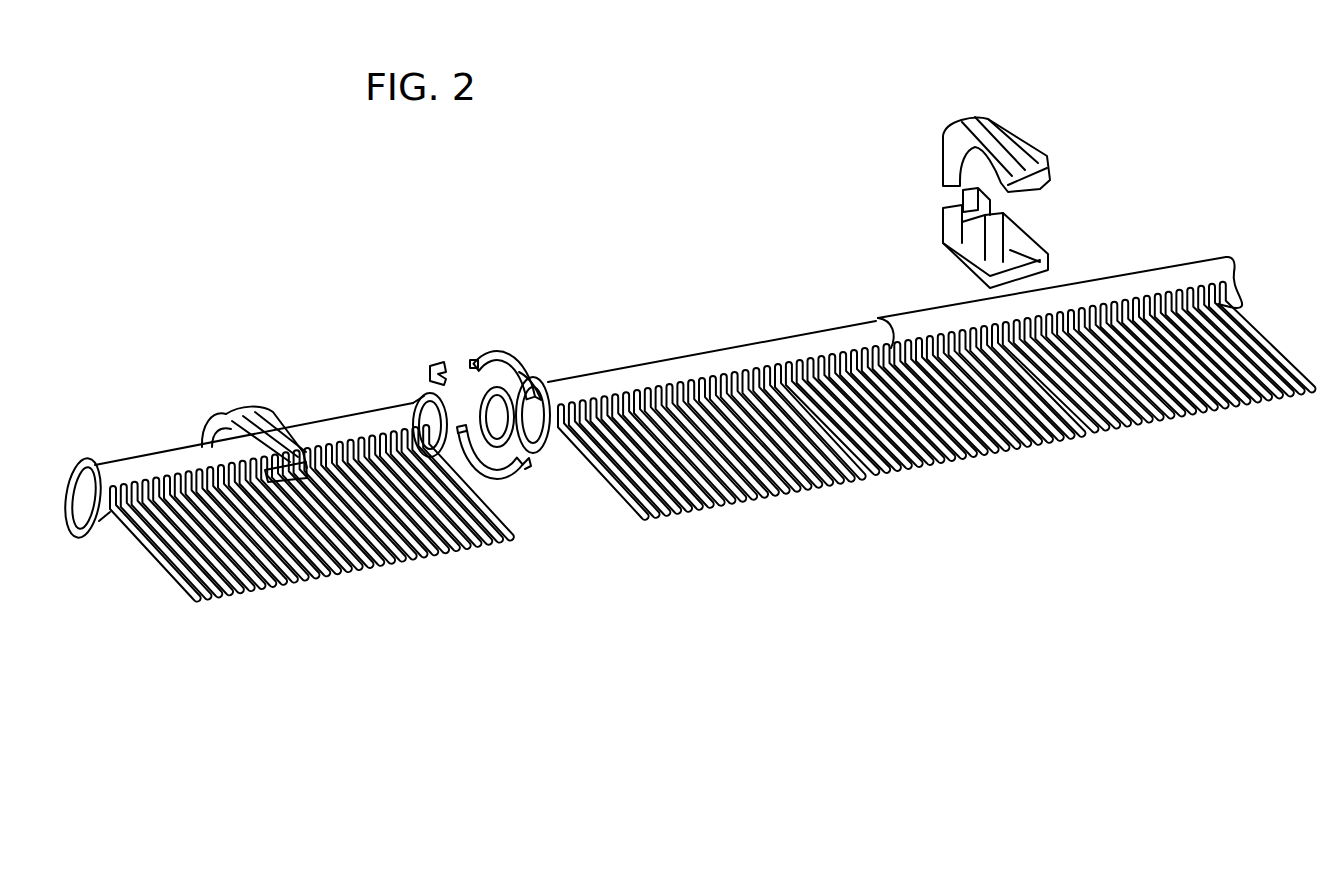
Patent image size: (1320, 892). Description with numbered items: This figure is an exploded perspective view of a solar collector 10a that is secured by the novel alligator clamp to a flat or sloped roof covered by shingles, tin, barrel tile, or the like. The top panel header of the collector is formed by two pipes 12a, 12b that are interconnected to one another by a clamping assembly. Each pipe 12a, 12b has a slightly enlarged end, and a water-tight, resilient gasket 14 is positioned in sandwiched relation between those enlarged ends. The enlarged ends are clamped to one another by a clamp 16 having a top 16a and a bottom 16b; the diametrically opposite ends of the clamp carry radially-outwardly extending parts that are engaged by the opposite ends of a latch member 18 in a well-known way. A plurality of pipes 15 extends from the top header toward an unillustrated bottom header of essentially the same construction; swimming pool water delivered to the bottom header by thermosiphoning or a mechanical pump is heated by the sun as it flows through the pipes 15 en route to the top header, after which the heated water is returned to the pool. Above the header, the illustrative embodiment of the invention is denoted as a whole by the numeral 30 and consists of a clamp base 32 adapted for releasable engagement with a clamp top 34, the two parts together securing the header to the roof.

The solar collector 10a is at (1147, 133).
The pipe 12a is at (343, 427).
The pipe 12b is at (657, 362).
The gasket 14 is at (473, 362).
The pipes 15 is at (165, 566).
The clamp 16 is at (525, 401).
The clamp top 16a is at (522, 362).
The clamp bottom 16b is at (493, 480).
The latch member 18 is at (430, 368).
The alligator clamp 30 is at (1061, 159).
The clamp base 32 is at (1027, 252).
The clamp top 34 is at (212, 418).